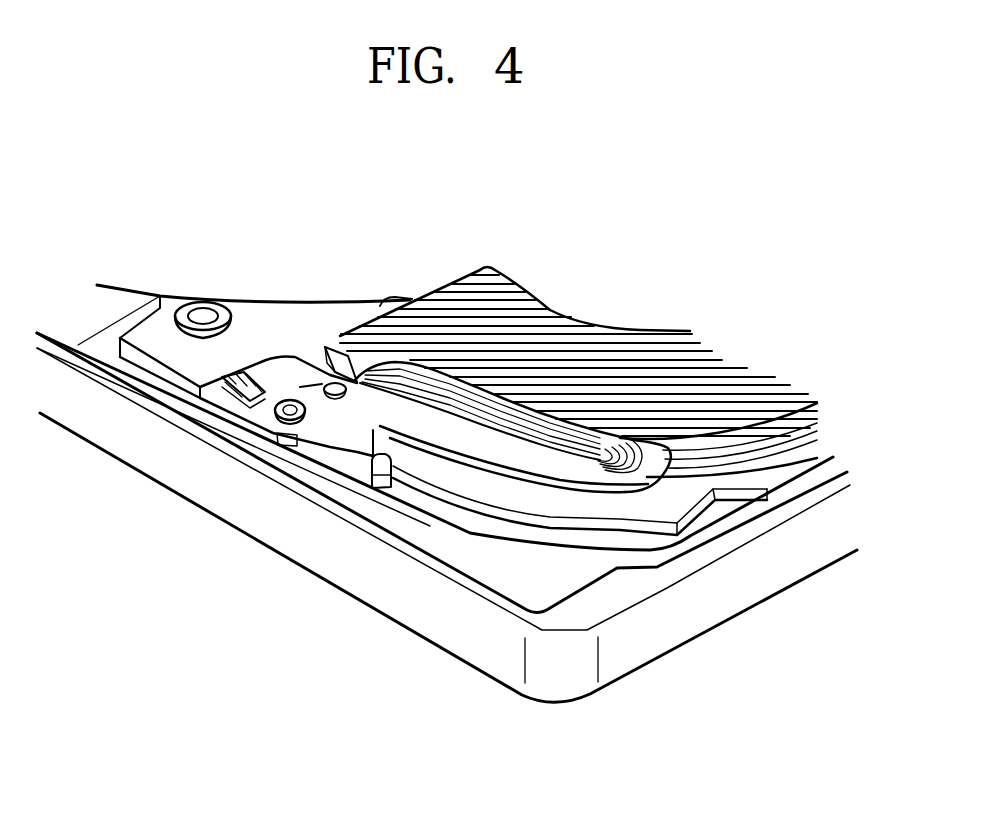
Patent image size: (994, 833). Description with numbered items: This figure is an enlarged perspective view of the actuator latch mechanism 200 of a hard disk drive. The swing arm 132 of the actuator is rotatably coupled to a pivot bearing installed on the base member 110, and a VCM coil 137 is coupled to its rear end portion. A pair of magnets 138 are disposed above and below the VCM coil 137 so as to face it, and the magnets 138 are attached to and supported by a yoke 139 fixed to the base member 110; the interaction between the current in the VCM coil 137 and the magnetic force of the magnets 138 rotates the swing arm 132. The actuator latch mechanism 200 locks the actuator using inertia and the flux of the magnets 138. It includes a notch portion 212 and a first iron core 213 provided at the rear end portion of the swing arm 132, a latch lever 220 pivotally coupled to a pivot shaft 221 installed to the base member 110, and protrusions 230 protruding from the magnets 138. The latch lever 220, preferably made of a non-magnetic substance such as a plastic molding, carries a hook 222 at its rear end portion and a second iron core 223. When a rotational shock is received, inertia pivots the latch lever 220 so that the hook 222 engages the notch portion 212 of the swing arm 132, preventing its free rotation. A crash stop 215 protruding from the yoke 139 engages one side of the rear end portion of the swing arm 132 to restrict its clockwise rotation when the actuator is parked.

The base member 110 is at (623, 664).
The swing arm 132 is at (587, 480).
The VCM coil 137 is at (614, 465).
The magnets 138 is at (758, 450).
The yoke 139 is at (687, 493).
The actuator latch mechanism 200 is at (347, 482).
The notch portion 212 is at (367, 430).
The first iron core 213 is at (320, 383).
The crash stop 215 is at (390, 300).
The latch lever 220 is at (248, 418).
The pivot shaft 221 is at (288, 448).
The hook 222 is at (381, 490).
The second iron core 223 is at (223, 385).
The protrusions 230 is at (334, 358).